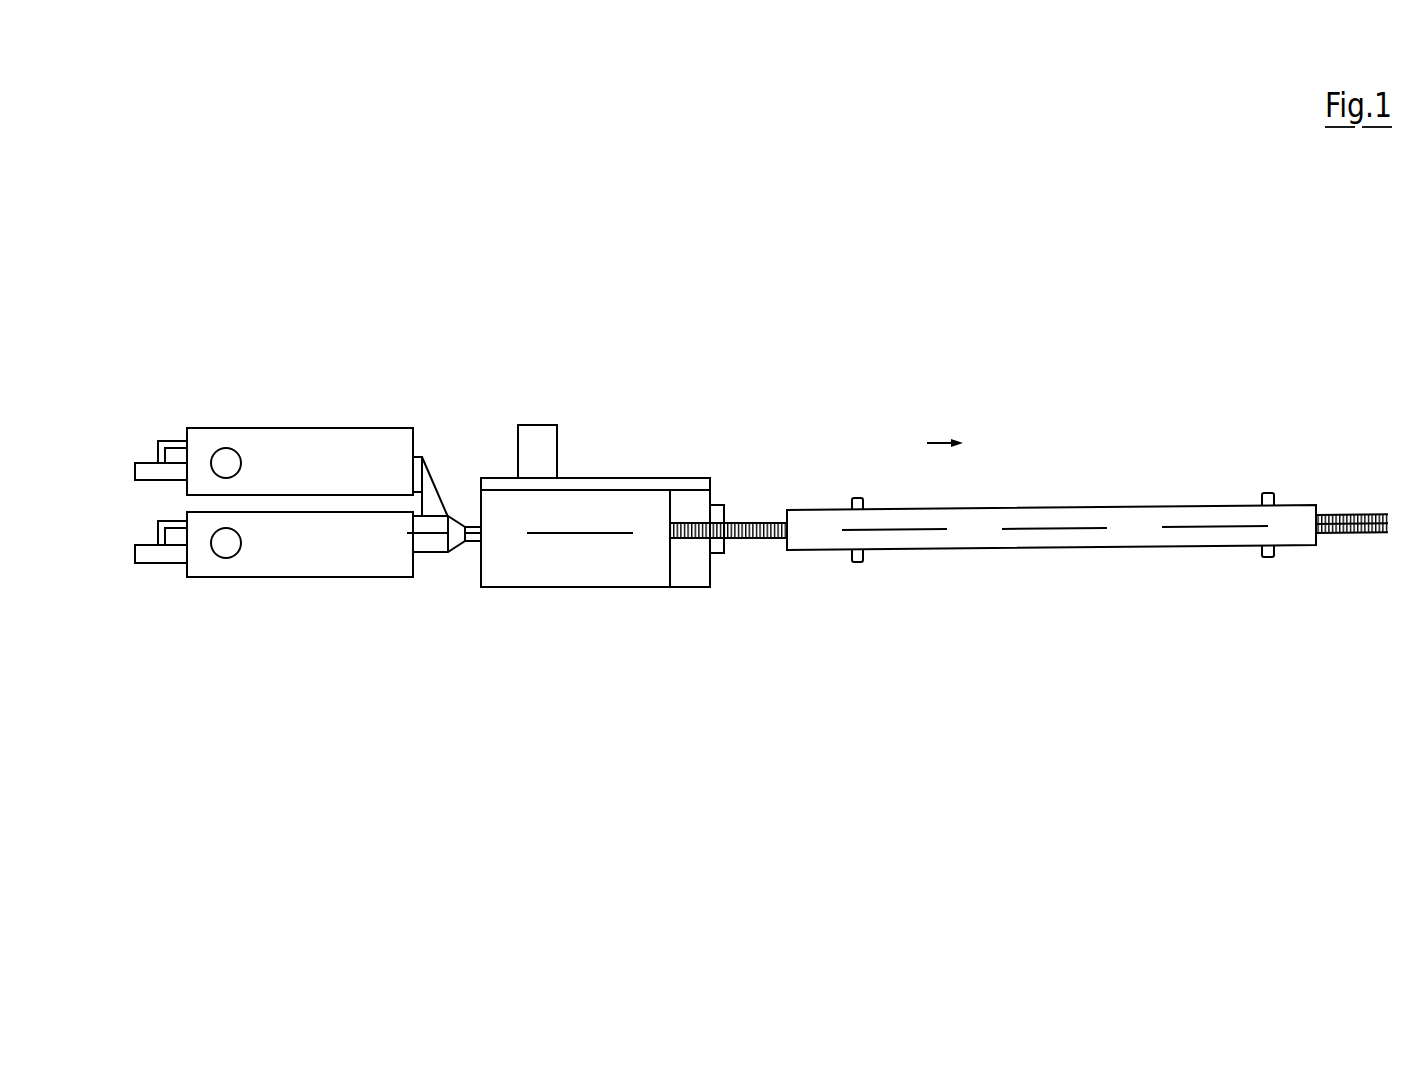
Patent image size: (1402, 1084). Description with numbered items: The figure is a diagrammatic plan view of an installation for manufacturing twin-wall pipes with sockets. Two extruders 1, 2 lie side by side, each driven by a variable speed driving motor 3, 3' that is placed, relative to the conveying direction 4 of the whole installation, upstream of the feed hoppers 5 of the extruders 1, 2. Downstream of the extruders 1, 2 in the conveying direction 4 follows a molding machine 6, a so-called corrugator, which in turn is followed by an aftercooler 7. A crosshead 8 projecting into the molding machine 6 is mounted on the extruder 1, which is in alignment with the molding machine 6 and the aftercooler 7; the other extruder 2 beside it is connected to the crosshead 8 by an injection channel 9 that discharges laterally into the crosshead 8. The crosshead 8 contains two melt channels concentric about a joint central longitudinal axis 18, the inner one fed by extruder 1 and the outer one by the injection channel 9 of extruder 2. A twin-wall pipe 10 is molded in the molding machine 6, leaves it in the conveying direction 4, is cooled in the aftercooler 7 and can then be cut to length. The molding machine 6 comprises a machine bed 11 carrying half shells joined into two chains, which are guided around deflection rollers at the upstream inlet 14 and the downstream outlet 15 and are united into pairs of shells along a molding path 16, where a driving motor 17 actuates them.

The extruder 1 is at (333, 557).
The extruder 2 is at (333, 478).
The variable speed driving motor 3 is at (170, 639).
The variable speed driving motor 3' is at (172, 394).
The conveying direction 4 is at (937, 443).
The feed hopper 5 is at (226, 462).
The molding machine 6 is at (590, 590).
The aftercooler 7 is at (1040, 550).
The crosshead 8 is at (432, 540).
The injection channel 9 is at (434, 456).
The twin-wall pipe 10 is at (750, 522).
The machine bed 11 is at (698, 567).
The upstream inlet 14 is at (479, 545).
The downstream outlet 15 is at (672, 550).
The molding path 16 is at (566, 561).
The driving motor 17 is at (541, 441).
The central longitudinal axis 18 is at (977, 527).